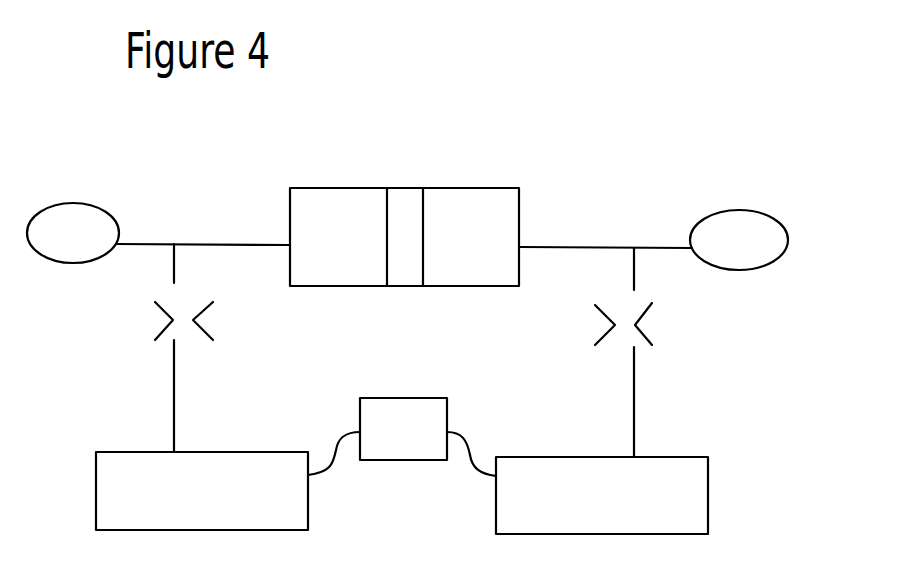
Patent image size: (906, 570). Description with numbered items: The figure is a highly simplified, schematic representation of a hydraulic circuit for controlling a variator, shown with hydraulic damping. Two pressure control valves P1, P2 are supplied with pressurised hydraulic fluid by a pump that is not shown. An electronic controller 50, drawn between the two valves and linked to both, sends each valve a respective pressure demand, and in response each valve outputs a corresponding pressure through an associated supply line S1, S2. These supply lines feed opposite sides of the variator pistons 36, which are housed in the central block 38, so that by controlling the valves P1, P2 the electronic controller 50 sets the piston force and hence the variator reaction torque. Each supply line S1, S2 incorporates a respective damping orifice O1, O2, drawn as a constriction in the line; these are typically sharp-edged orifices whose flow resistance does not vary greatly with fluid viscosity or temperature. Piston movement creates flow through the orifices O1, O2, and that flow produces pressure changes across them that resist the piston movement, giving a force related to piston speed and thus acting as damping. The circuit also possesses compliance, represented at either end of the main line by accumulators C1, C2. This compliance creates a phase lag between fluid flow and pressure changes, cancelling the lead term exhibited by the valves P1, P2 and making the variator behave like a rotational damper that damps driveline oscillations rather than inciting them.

The accumulator C1 is at (87, 203).
The accumulator C2 is at (733, 210).
The variator piston 36 is at (412, 202).
The pump housing 38 is at (470, 286).
The damping orifice O1 is at (210, 330).
The damping orifice O2 is at (648, 335).
The supply line S1 is at (174, 397).
The supply line S2 is at (634, 388).
The pressure control valve P1 is at (183, 510).
The pressure control valve P2 is at (602, 515).
The electronic controller 50 is at (410, 445).